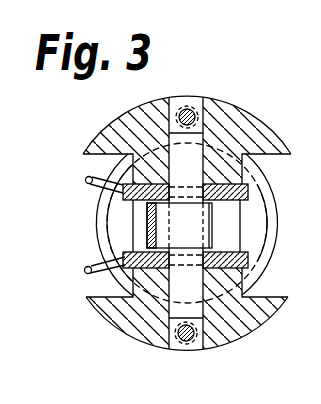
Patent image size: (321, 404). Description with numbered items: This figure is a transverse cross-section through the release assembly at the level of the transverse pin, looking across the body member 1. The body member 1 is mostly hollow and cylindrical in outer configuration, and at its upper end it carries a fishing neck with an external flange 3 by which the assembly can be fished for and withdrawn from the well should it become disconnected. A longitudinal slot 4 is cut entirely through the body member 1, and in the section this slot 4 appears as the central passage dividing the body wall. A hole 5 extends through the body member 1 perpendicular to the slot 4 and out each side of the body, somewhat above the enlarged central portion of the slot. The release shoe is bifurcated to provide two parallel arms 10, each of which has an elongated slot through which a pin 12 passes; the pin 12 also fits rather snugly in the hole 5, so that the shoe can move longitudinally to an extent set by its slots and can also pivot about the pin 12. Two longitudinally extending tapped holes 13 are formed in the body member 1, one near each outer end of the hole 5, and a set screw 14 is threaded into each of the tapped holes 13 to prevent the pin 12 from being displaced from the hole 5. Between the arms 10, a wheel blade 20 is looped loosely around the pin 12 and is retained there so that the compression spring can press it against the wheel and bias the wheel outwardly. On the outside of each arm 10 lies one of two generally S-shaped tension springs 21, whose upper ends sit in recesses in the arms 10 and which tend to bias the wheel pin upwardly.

The body member 1 is at (254, 111).
The external flange 3 is at (99, 219).
The longitudinal slot 4 is at (240, 240).
The hole 5 is at (205, 122).
The arms 10 is at (248, 192).
The pin 12 is at (168, 298).
The tapped holes 13 is at (184, 106).
The set screws 14 is at (178, 111).
The wheel blade 20 is at (162, 227).
The tension springs 21 is at (86, 178).